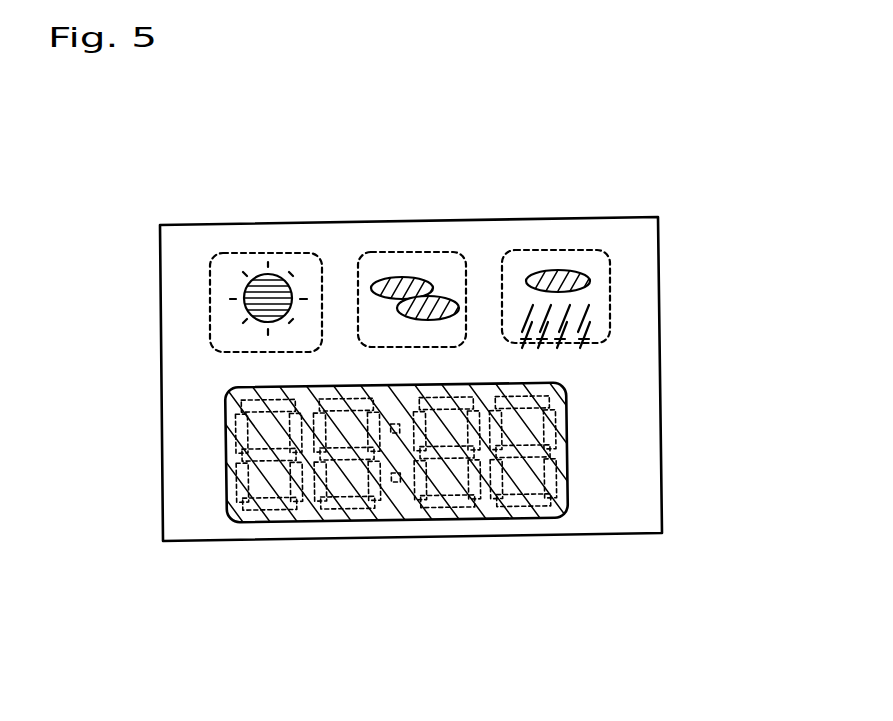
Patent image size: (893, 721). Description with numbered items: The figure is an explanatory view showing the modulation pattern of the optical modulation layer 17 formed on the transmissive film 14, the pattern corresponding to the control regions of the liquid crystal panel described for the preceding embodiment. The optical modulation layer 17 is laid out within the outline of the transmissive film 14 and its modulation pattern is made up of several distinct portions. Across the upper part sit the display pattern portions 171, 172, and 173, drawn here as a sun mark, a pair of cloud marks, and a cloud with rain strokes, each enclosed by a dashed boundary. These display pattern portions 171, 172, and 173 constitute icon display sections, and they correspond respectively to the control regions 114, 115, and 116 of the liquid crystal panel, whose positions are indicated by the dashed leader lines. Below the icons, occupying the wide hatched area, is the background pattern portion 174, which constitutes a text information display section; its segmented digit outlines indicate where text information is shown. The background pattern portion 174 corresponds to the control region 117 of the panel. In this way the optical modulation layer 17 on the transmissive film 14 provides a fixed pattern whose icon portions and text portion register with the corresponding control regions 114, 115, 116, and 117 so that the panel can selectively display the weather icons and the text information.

The transmissive film 14 is at (661, 377).
The optical modulation layer 17 is at (208, 366).
The control region 114 is at (212, 275).
The control region 115 is at (360, 277).
The control region 116 is at (502, 278).
The control region 117 is at (384, 525).
The display pattern portion 171 is at (262, 275).
The display pattern portion 172 is at (400, 278).
The display pattern portion 173 is at (547, 271).
The background pattern portion 174 is at (390, 520).